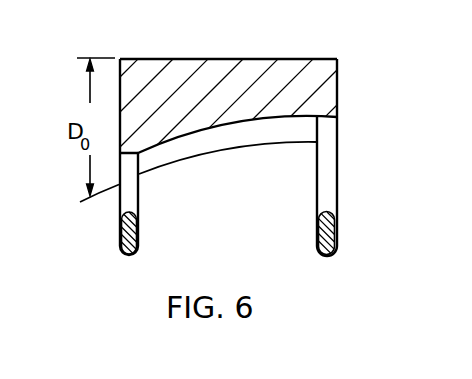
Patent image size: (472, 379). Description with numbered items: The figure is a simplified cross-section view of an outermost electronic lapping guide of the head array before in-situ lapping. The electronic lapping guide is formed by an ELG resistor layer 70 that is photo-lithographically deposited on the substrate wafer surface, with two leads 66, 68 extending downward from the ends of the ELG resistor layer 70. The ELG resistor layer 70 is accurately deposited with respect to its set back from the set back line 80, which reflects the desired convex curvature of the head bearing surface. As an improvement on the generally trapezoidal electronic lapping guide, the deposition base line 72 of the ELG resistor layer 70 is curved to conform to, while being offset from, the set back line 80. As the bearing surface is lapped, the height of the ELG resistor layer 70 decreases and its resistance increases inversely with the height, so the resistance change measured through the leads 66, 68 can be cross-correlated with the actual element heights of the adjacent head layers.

The lead 66 is at (119, 199).
The lead 68 is at (338, 192).
The ELG resistor layer 70 is at (317, 66).
The deposition base line 72 is at (272, 122).
The set back line 80 is at (368, 150).